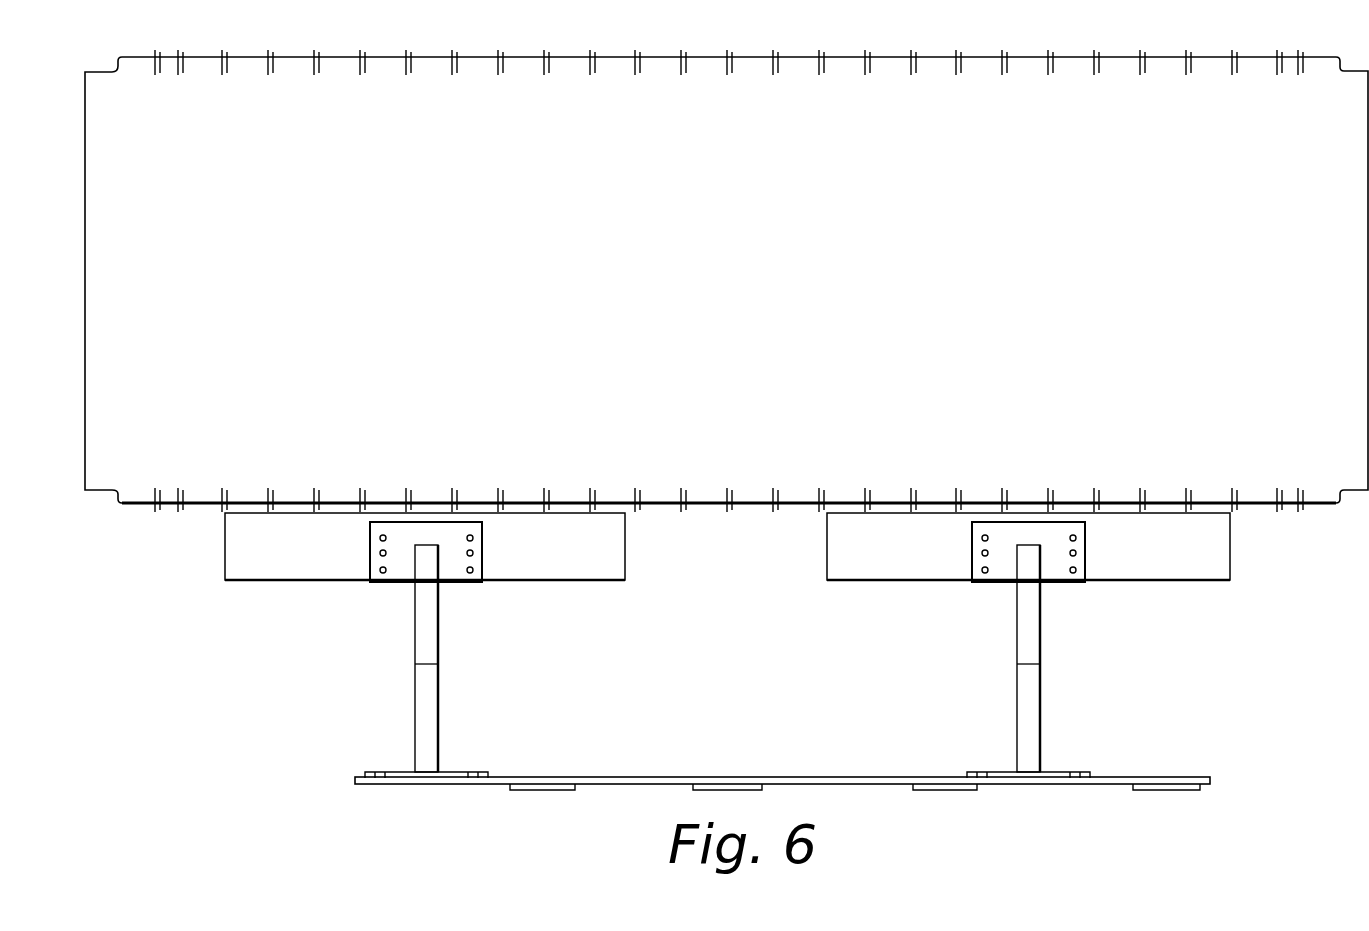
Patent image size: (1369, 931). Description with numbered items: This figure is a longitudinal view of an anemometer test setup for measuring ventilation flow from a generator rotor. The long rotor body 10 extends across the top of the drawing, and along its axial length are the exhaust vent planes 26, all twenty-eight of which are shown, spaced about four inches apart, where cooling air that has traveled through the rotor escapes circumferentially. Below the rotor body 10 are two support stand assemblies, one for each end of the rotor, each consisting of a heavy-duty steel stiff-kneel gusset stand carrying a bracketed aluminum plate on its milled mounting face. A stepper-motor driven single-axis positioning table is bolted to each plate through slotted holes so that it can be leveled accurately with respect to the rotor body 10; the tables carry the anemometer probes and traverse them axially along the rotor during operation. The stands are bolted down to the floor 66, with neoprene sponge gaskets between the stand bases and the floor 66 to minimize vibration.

The rotor body 10 is at (728, 290).
The exhaust vent planes 26 is at (635, 57).
The floor 66 is at (624, 777).